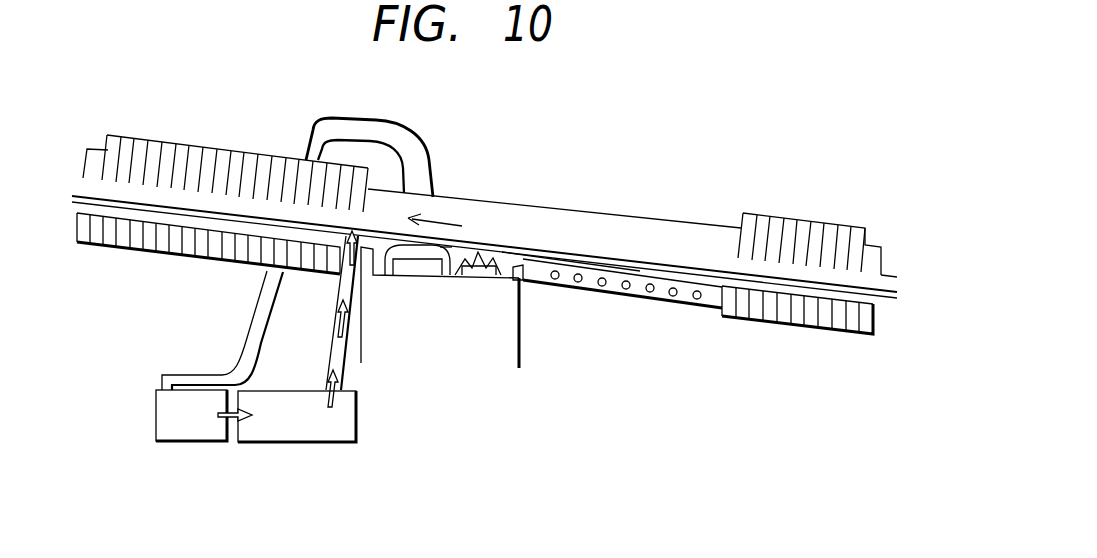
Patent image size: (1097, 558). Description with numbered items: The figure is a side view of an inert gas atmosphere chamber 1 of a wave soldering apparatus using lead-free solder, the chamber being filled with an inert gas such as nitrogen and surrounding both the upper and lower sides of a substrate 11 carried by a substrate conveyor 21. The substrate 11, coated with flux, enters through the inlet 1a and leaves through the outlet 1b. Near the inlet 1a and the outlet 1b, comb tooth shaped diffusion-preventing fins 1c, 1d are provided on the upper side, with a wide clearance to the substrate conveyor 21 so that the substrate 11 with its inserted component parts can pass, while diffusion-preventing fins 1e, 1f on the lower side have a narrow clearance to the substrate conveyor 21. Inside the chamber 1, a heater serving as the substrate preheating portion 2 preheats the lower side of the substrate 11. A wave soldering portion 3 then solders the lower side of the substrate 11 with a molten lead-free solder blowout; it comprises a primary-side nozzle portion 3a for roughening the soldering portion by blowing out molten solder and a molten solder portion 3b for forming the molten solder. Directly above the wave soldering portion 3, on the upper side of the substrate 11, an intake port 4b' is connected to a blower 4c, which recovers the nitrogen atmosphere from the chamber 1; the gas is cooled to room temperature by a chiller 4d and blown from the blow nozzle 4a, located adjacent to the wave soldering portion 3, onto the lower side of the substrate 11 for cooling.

The inert gas atmosphere chamber 1 is at (547, 205).
The inlet of the chamber 1a is at (879, 283).
The outlet of the chamber 1b is at (87, 188).
The diffusion-preventing fin 1c is at (846, 240).
The diffusion-preventing fin 1d is at (218, 163).
The diffusion-preventing fin 1e is at (810, 327).
The diffusion-preventing fin 1f is at (163, 252).
The substrate 11 is at (469, 243).
The substrate preheating portion 2 is at (627, 297).
The substrate conveyor 21 is at (601, 255).
The wave soldering portion 3 is at (483, 345).
The primary-side nozzle portion 3a is at (417, 262).
The molten solder portion 3b is at (483, 270).
The blow nozzle 4a is at (340, 297).
The intake port 4b' is at (394, 146).
The blower 4c is at (193, 442).
The chiller 4d is at (283, 442).